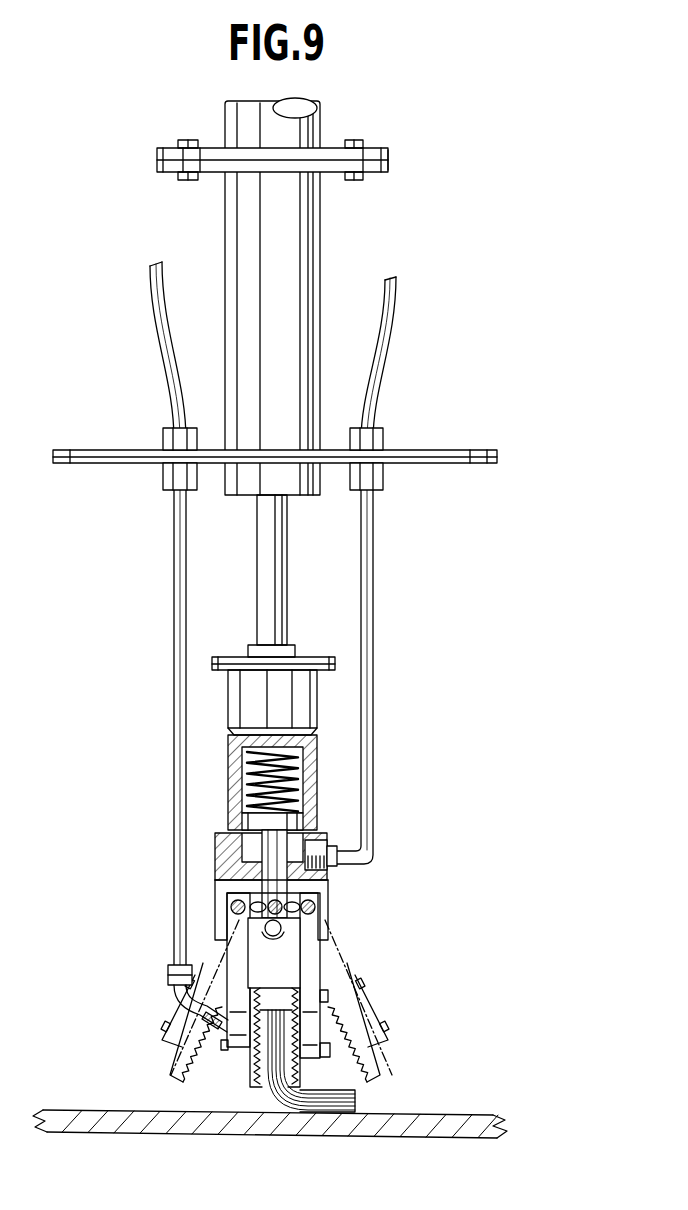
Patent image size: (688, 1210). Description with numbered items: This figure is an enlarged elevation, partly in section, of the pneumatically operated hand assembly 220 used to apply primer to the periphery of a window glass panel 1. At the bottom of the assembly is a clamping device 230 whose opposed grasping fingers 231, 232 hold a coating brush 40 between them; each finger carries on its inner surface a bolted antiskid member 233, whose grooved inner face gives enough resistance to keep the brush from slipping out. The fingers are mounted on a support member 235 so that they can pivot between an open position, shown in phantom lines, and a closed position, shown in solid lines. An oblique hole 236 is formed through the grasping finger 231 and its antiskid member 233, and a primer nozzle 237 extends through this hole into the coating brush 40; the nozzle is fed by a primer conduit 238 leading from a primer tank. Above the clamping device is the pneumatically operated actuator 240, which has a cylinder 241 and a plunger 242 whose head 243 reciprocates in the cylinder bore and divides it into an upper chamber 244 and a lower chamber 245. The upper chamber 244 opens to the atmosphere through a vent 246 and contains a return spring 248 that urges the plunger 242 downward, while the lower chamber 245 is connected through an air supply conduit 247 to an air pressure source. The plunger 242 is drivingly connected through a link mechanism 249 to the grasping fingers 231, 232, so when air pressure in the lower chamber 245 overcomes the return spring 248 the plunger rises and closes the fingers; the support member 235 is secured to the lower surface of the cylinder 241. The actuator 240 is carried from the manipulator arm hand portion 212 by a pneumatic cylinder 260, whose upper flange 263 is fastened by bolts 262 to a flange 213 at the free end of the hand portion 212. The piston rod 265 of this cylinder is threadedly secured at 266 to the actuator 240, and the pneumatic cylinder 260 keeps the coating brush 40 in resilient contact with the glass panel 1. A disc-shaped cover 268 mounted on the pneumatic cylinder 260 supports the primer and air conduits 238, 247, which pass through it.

The window glass panel 1 is at (441, 1130).
The coating brush 40 is at (356, 1101).
The manipulator arm hand portion 212 is at (321, 126).
The flange 213 is at (168, 145).
The hand assembly 220 is at (343, 630).
The clamping device 230 is at (297, 1024).
The grasping finger 231 is at (229, 958).
The grasping finger 232 is at (313, 978).
The antiskid member 233 is at (296, 1083).
The support member 235 is at (330, 906).
The oblique hole 236 is at (244, 1060).
The primer nozzle 237 is at (188, 1000).
The primer conduit 238 is at (178, 719).
The pneumatically operated actuator 240 is at (307, 745).
The cylinder 241 is at (314, 832).
The plunger 242 is at (280, 886).
The plunger head 243 is at (292, 822).
The upper chamber 244 is at (300, 771).
The lower chamber 245 is at (247, 838).
The vent 246 is at (230, 760).
The air supply conduit 247 is at (374, 782).
The return spring 248 is at (246, 784).
The link mechanism 249 is at (320, 915).
The pneumatic cylinder 260 is at (323, 279).
The bolts 262 is at (364, 143).
The flange 263 is at (374, 169).
The piston rod 265 is at (284, 568).
The threaded connection 266 is at (252, 645).
The disc-shaped cover 268 is at (462, 455).